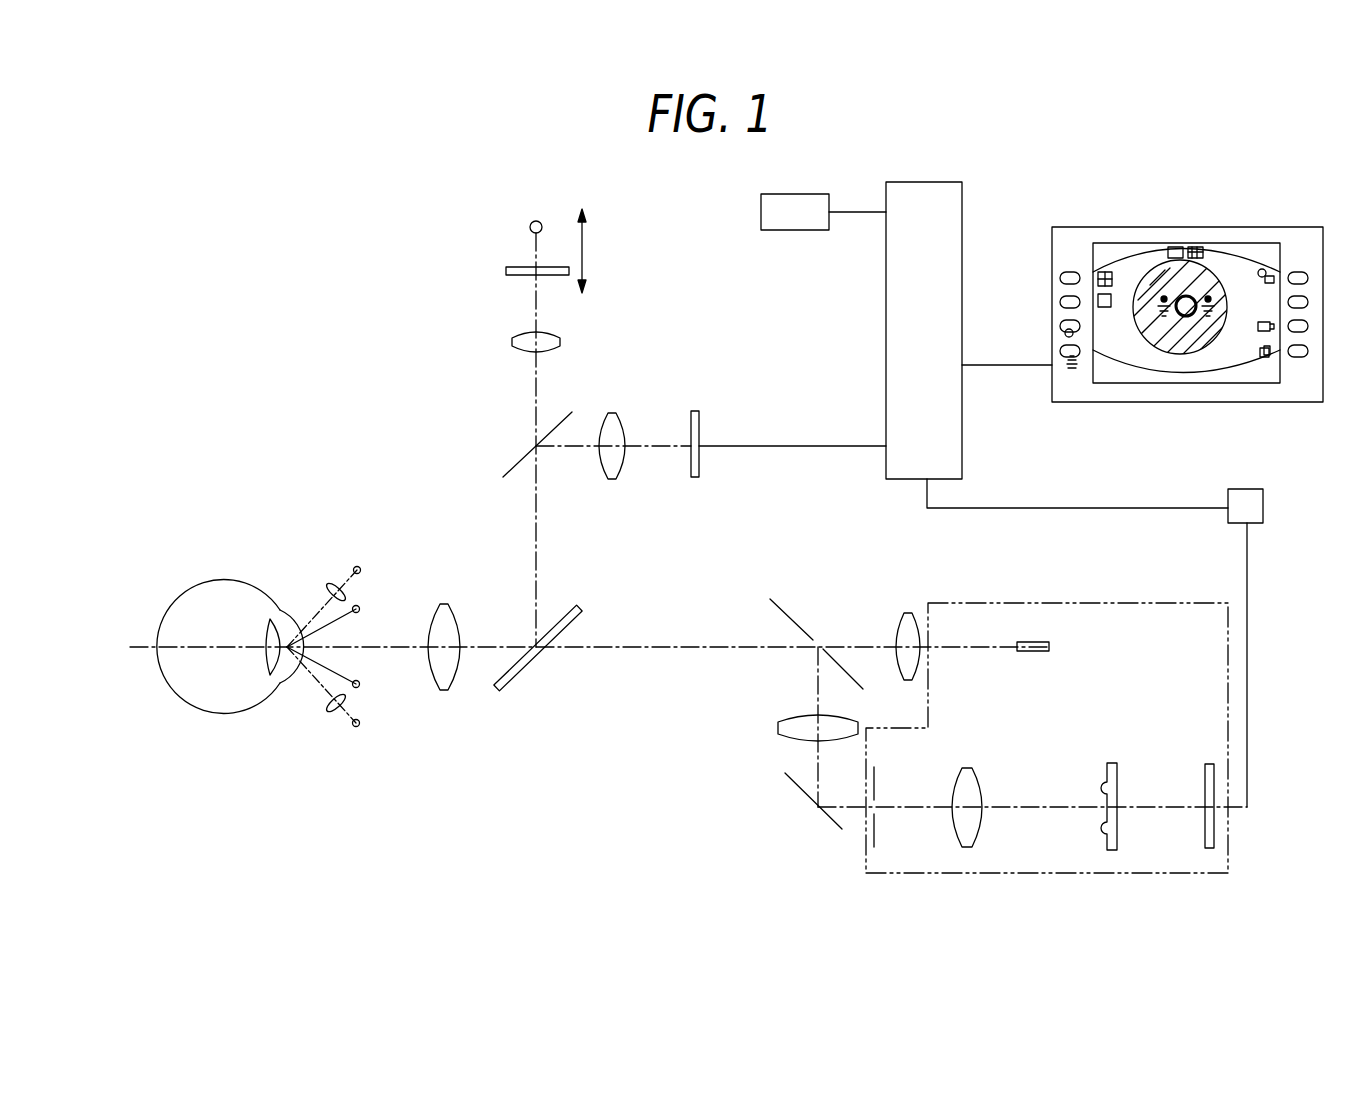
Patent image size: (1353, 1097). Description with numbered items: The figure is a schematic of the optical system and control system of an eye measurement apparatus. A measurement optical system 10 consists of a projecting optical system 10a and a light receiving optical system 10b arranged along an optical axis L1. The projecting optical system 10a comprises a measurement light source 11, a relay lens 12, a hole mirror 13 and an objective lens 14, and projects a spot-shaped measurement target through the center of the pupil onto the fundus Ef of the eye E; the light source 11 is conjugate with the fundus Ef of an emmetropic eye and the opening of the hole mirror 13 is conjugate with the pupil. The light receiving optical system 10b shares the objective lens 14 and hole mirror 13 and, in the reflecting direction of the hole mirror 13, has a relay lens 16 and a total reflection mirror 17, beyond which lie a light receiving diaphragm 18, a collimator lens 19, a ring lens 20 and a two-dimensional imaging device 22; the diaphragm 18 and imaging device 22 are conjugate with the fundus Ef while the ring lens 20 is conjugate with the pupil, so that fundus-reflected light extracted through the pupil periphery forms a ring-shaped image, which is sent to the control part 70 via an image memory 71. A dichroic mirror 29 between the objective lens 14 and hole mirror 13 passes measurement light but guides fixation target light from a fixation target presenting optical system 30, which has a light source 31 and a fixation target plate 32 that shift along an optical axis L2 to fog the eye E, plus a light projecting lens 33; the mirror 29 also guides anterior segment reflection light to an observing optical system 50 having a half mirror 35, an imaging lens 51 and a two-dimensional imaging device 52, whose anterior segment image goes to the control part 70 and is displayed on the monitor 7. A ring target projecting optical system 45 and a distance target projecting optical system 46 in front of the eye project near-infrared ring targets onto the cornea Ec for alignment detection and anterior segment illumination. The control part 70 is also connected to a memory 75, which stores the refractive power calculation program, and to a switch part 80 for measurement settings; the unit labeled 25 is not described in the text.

The monitor 7 is at (1187, 314).
The measurement optical system 10 is at (452, 798).
The projecting optical system 10a is at (985, 572).
The light receiving optical system 10b is at (680, 838).
The measurement light source 11 is at (1042, 642).
The relay lens 12 is at (905, 612).
The hole mirror 13 is at (808, 636).
The objective lens 14 is at (449, 679).
The relay lens 16 is at (778, 728).
The total reflection mirror 17 is at (810, 805).
The light receiving diaphragm 18 is at (871, 835).
The collimator lens 19 is at (972, 770).
The ring lens 20 is at (1117, 772).
The two-dimensional imaging device 22 is at (1214, 820).
The measurement unit 25 is at (1158, 600).
The dichroic mirror 29 is at (533, 663).
The fixation target presenting optical system 30 is at (380, 272).
The light source 31 is at (529, 226).
The fixation target plate 32 is at (506, 271).
The light projecting lens 33 is at (520, 340).
The half mirror 35 is at (525, 457).
The ring target projecting optical system 45 is at (368, 585).
The distance target projecting optical system 46 is at (334, 562).
The observing optical system 50 is at (694, 522).
The imaging lens 51 is at (620, 460).
The two-dimensional imaging device 52 is at (702, 458).
The control part 70 is at (962, 440).
The image memory 71 is at (1263, 505).
The memory 75 is at (761, 212).
The switch part 80 is at (1062, 235).
The eye E is at (185, 592).
The cornea Ec is at (302, 615).
The fundus Ef is at (158, 662).
The optical axis L1 is at (642, 649).
The optical axis L2 is at (536, 407).